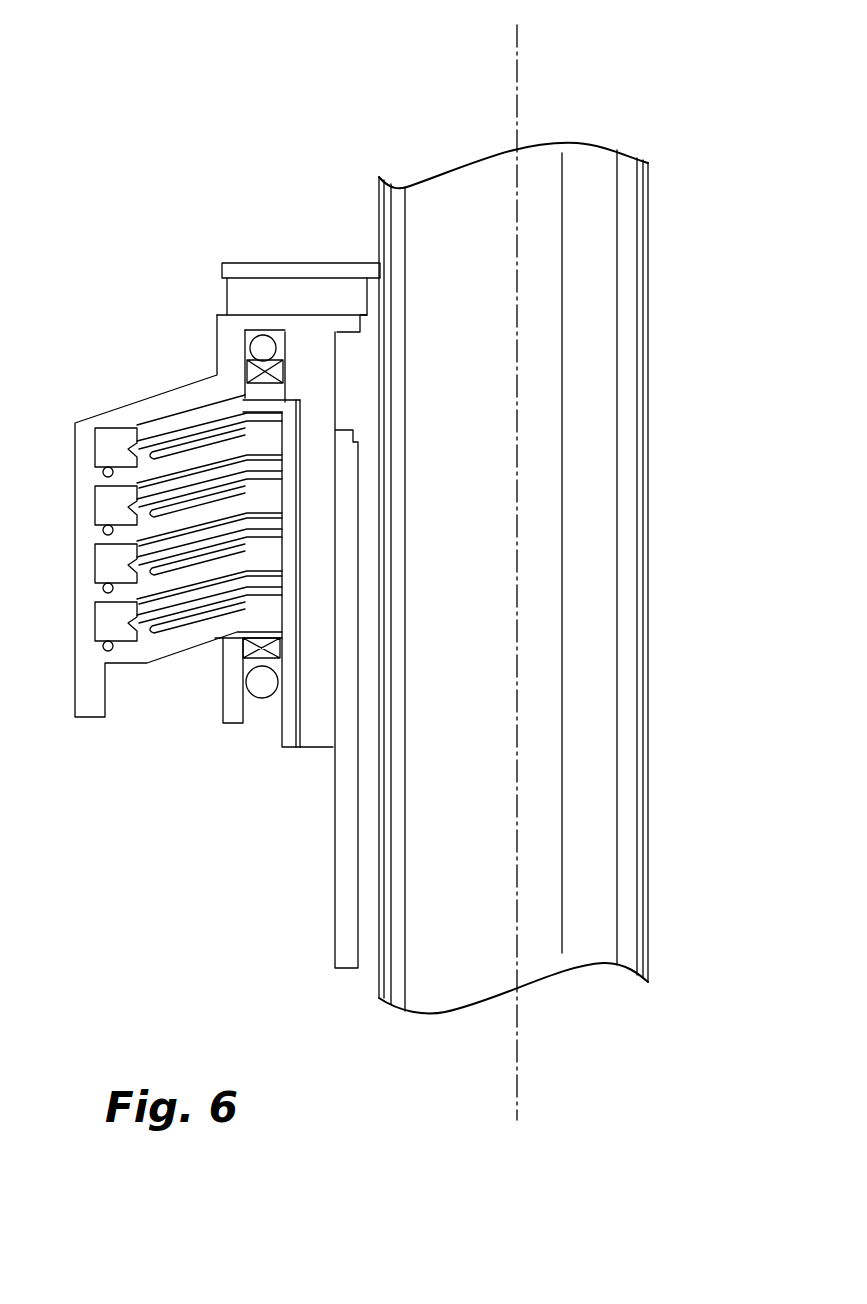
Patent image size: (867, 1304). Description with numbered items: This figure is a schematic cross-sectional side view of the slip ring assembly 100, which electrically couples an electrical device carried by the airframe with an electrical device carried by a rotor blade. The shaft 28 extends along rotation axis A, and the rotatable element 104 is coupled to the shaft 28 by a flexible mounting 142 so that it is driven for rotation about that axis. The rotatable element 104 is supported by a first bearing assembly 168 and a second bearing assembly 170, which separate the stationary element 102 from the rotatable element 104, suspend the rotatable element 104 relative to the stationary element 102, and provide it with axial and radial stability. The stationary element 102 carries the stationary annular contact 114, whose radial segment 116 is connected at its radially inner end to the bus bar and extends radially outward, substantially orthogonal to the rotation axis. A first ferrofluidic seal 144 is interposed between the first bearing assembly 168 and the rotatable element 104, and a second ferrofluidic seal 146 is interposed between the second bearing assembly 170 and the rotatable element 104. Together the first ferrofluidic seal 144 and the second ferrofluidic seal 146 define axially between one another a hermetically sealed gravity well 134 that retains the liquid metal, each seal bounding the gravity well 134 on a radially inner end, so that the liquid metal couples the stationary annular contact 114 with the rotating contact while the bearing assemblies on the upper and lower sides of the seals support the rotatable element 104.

The shaft 28 is at (640, 493).
The slip ring assembly 100 is at (172, 137).
The stationary element 102 is at (318, 262).
The rotatable element 104 is at (52, 368).
The stationary annular contact 114 is at (188, 427).
The radial segment 116 is at (273, 447).
The gravity well 134 is at (140, 438).
The flexible mounting 142 is at (228, 293).
The first ferrofluidic seal 144 is at (247, 362).
The second ferrofluidic seal 146 is at (222, 655).
The first bearing assembly 168 is at (263, 346).
The second bearing assembly 170 is at (265, 685).